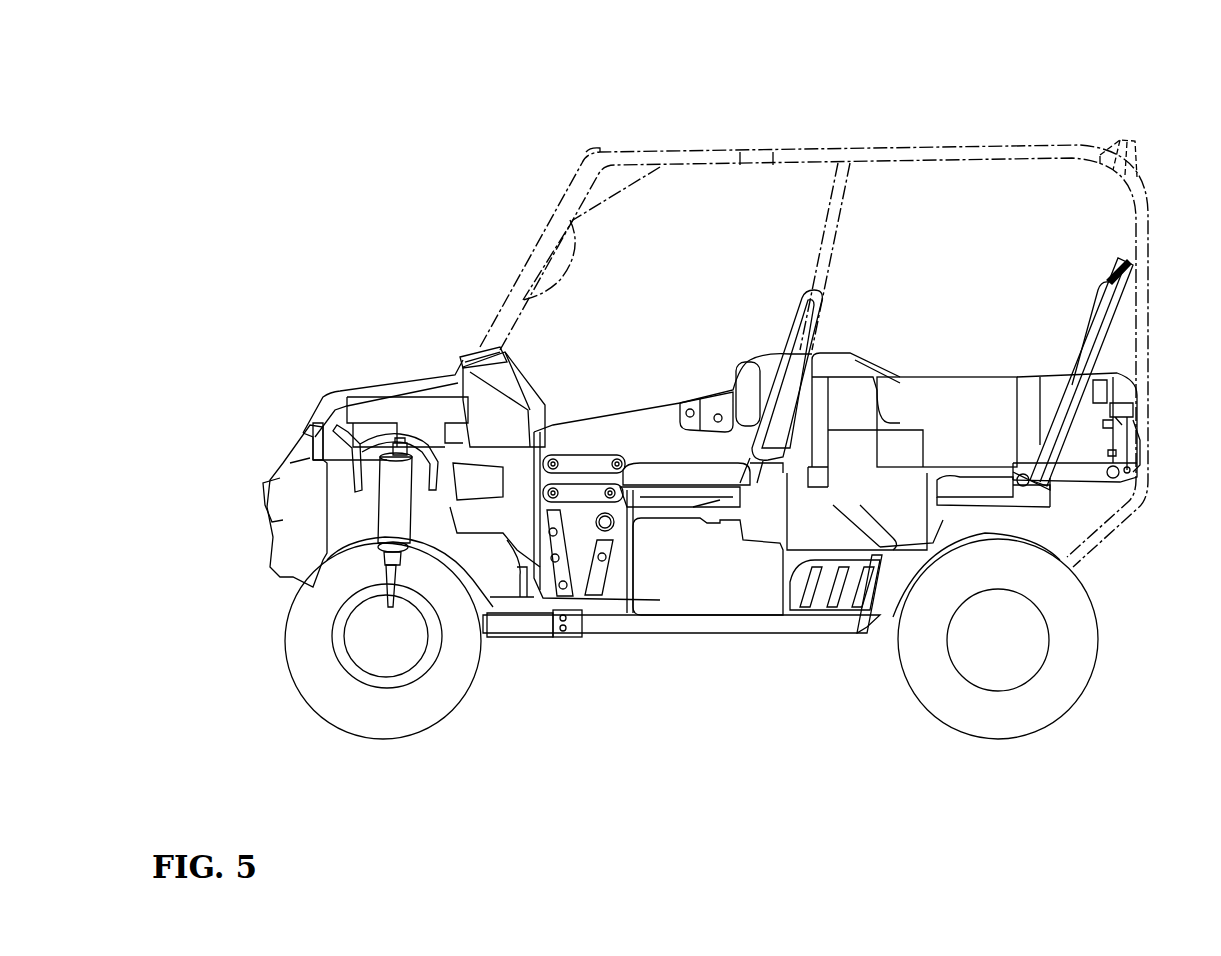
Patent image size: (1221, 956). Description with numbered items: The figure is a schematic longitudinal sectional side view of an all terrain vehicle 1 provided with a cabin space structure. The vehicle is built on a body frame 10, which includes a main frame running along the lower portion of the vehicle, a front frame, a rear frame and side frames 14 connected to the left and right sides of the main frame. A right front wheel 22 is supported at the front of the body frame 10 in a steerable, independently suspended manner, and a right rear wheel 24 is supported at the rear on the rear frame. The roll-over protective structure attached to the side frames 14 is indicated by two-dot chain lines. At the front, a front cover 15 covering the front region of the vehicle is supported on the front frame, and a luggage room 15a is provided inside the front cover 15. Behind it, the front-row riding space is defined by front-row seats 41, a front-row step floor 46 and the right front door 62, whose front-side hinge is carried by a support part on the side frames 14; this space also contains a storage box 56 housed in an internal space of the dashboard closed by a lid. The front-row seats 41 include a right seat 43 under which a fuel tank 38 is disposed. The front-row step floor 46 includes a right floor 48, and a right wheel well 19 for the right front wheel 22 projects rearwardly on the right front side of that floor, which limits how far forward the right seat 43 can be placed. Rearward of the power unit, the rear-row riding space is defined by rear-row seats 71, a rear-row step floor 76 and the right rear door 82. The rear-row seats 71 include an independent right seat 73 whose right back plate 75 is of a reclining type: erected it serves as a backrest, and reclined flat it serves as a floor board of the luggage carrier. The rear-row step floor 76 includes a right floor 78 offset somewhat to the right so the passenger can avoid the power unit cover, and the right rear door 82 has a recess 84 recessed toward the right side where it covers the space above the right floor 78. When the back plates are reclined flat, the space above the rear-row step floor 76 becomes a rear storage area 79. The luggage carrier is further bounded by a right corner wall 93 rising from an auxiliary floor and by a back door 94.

The all terrain vehicle 1 is at (976, 120).
The front cover 15 is at (327, 447).
The luggage room 15a is at (407, 395).
The storage box 56 is at (463, 365).
The right front door 62 is at (590, 428).
The right seat 43 is at (678, 441).
The front-row seats 41 is at (663, 470).
The fuel tank 38 is at (693, 592).
The rear storage area 79 is at (847, 577).
The right rear door 82 is at (950, 393).
The right seat 73 is at (993, 422).
The rear-row seats 71 is at (970, 487).
The right corner wall 93 is at (1123, 410).
The back door 94 is at (1140, 431).
The right back plate 75 is at (1113, 277).
The side frames 14 is at (681, 649).
The body frame 10 is at (745, 618).
The right floor 48 is at (581, 647).
The front-row step floor 46 is at (597, 593).
The right wheel well 19 is at (517, 590).
The recess 84 is at (802, 600).
The right floor 78 is at (859, 628).
The rear-row step floor 76 is at (852, 573).
The right front wheel 22 is at (400, 717).
The right rear wheel 24 is at (1003, 727).